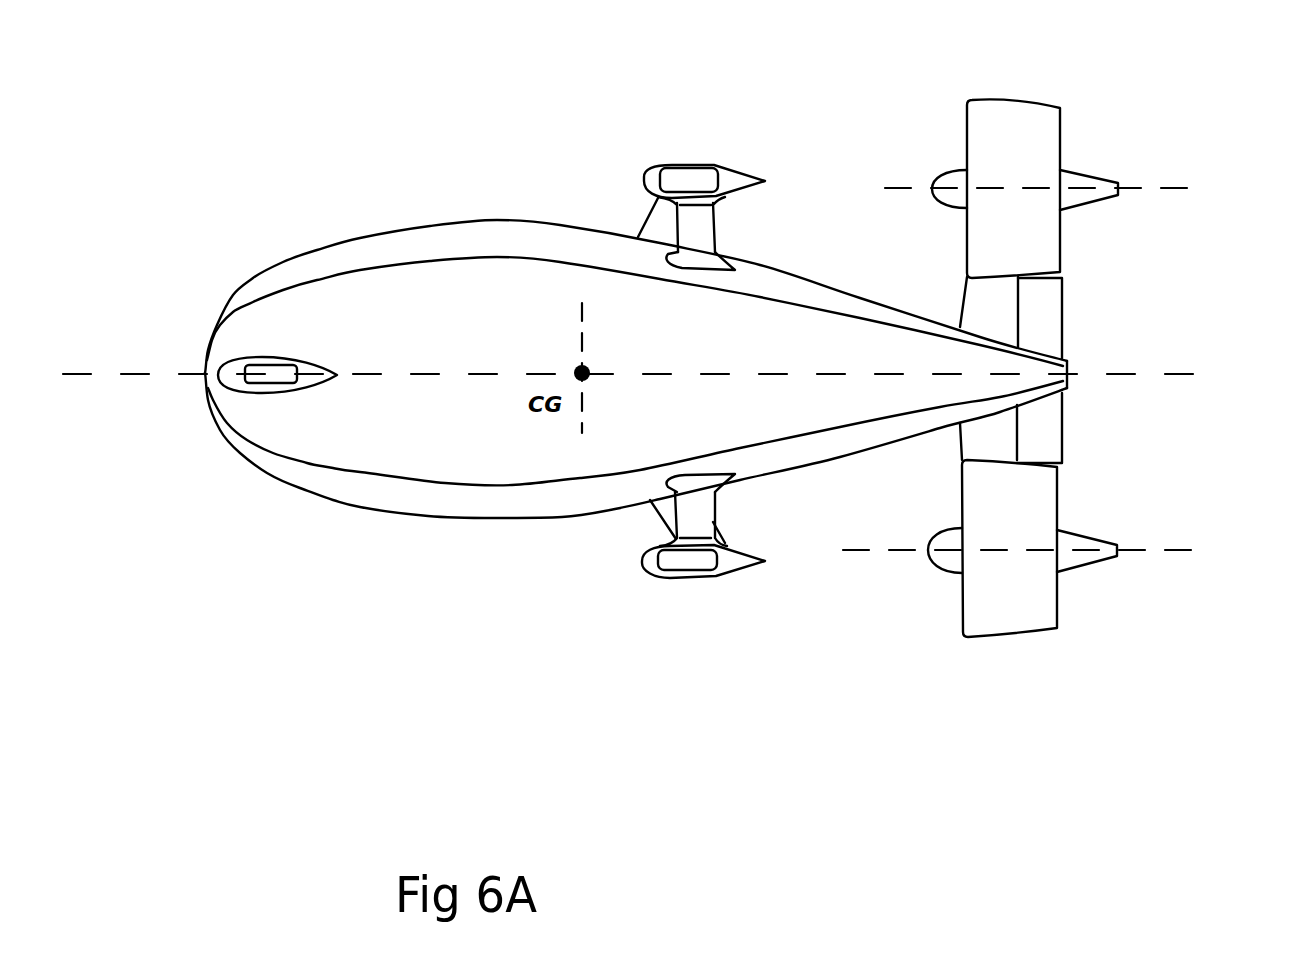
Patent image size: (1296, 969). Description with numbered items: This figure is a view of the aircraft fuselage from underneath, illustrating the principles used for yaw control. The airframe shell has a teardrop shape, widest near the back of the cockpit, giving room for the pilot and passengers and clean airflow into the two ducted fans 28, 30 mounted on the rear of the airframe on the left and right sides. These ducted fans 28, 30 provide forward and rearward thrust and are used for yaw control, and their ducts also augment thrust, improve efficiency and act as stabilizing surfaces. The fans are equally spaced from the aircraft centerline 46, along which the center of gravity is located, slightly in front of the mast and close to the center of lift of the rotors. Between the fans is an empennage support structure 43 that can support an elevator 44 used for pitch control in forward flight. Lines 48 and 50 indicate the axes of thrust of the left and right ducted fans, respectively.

The ducted fan 28 is at (1062, 107).
The ducted fan 30 is at (1060, 626).
The empennage support structure 43 is at (968, 318).
The elevator 44 is at (1052, 318).
The aircraft centerline 46 is at (135, 368).
The axis of thrust of left ducted fan 48 is at (1190, 183).
The axis of thrust of right ducted fan 50 is at (1048, 550).